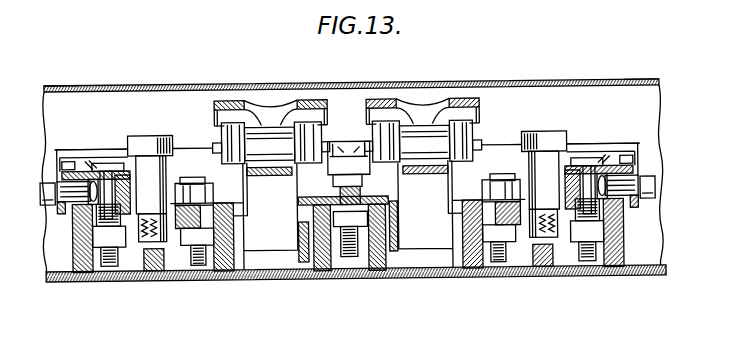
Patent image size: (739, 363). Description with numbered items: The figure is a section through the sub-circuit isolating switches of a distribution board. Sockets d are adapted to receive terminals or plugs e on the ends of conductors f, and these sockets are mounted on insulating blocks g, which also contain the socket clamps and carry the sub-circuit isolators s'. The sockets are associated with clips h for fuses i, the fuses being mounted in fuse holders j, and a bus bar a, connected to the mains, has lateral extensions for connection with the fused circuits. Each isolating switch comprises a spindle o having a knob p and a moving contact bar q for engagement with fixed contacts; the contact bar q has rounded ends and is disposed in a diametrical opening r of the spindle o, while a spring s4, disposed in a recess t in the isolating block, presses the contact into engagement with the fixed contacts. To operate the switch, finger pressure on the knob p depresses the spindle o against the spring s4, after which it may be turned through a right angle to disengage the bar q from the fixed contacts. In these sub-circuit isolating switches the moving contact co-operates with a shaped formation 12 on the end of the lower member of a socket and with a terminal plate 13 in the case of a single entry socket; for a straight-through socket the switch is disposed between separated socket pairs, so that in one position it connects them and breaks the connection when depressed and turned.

The shaped formation 12 is at (630, 302).
The terminal plate 13 is at (183, 196).
The knob p is at (138, 150).
The sub-circuit isolator s' is at (345, 134).
The diametrical opening r is at (147, 238).
The clip h is at (250, 114).
The fuse i is at (277, 138).
The fuse holder j is at (300, 192).
The socket d is at (78, 170).
The conductor f is at (50, 183).
The plug e is at (75, 197).
The insulating block g is at (80, 270).
The spindle o is at (147, 254).
The recess t is at (152, 280).
The spring s4 is at (587, 301).
The moving contact bar q is at (227, 280).
The bus bar a is at (295, 260).